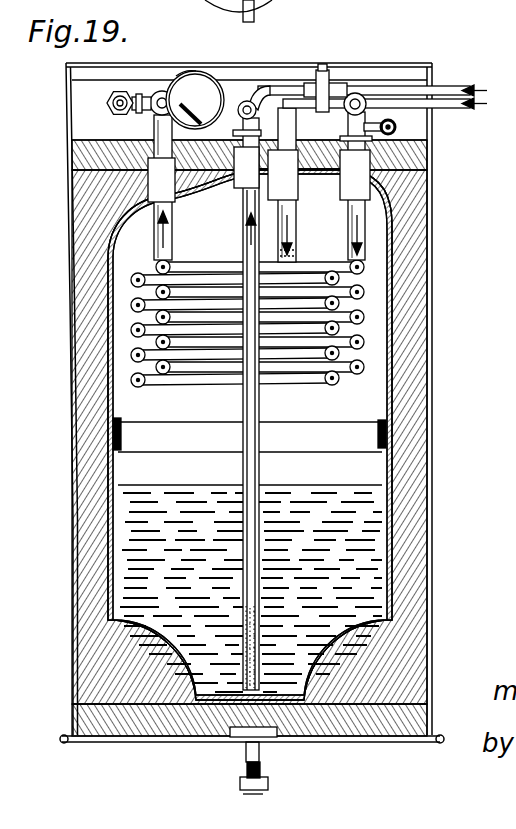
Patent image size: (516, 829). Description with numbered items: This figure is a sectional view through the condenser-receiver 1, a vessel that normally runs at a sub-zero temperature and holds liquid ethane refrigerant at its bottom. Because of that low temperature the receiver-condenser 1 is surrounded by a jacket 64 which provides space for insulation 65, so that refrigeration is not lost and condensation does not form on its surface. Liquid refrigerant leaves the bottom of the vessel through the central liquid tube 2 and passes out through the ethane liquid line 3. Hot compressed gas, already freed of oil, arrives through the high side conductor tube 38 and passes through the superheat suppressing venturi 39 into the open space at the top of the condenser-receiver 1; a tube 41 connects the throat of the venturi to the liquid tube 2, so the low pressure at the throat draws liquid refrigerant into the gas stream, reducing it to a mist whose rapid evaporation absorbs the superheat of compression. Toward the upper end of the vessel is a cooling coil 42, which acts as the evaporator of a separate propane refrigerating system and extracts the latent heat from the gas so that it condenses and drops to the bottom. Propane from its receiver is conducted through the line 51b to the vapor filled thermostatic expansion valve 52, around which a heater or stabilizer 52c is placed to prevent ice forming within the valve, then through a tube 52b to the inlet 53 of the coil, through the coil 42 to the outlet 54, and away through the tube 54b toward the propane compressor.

The condenser-receiver 1 is at (378, 400).
The central liquid tube 2 is at (260, 467).
The ethane liquid line 3 is at (246, 100).
The high side conductor tube 38 is at (295, 217).
The superheat suppressing venturi 39 is at (322, 70).
The tube 41 is at (275, 86).
The cooling coil 42 is at (340, 330).
The line 51b is at (460, 108).
The vapor filled thermostatic expansion valve 52 is at (189, 82).
The tube 52b is at (107, 105).
The heater or stabilizer 52c is at (176, 74).
The inlet 53 is at (360, 94).
The outlet 54 is at (156, 242).
The tube 54b is at (164, 92).
The jacket 64 is at (430, 444).
The insulation 65 is at (413, 499).